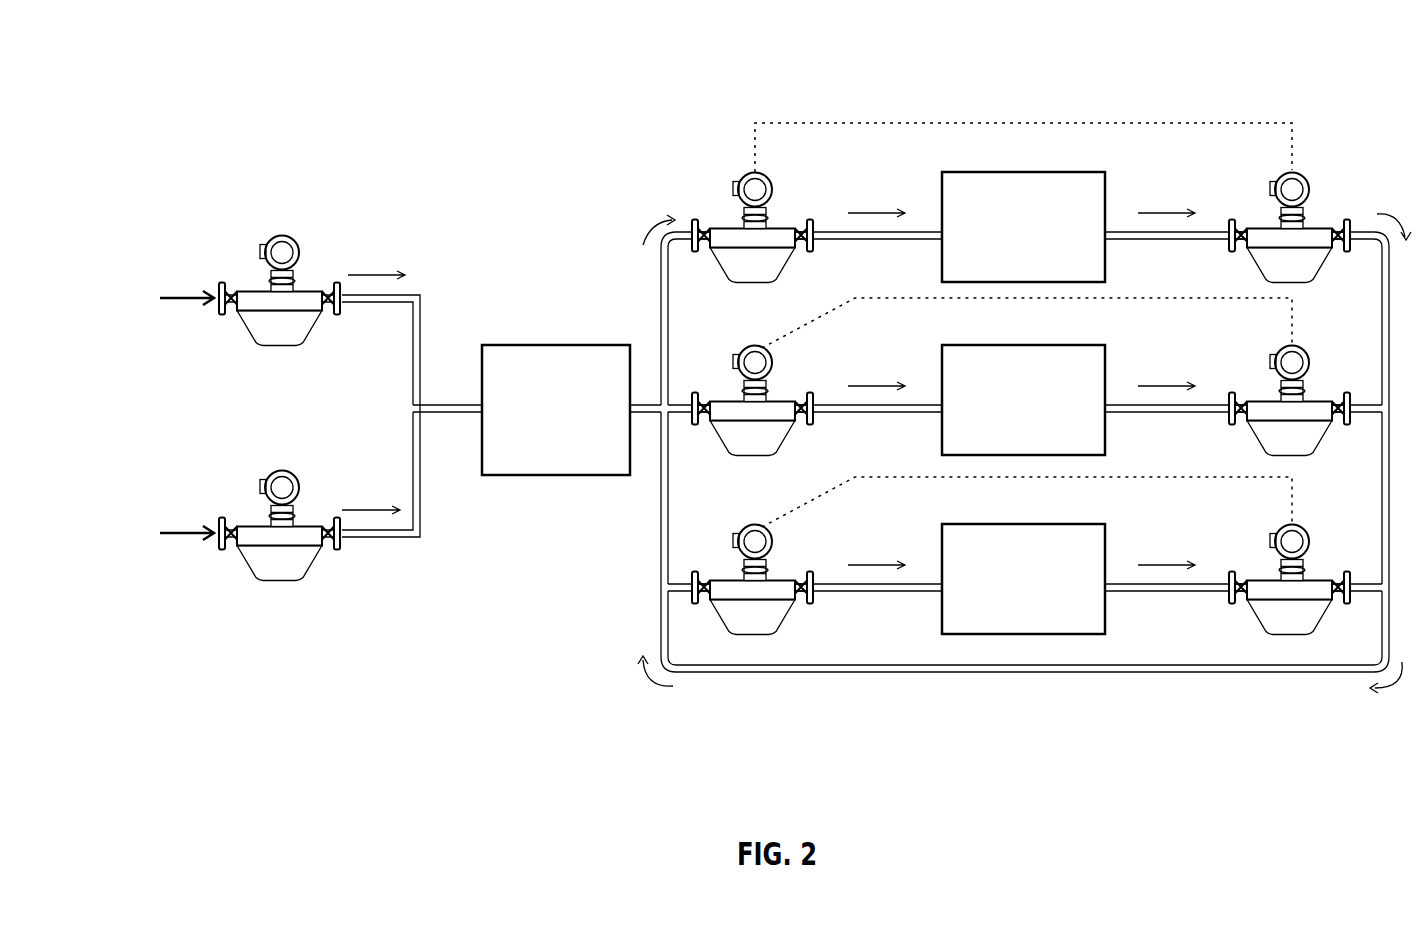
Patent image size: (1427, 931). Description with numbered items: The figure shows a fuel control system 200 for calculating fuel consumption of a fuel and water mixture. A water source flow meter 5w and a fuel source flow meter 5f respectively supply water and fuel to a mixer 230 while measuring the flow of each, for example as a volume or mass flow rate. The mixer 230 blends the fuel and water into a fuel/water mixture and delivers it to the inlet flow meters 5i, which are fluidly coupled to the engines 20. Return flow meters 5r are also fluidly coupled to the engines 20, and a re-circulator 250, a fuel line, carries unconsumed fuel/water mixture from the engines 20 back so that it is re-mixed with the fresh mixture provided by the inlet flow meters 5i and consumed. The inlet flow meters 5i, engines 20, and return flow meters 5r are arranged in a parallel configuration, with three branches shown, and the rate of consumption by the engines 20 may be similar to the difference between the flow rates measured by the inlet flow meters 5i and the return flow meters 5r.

The fuel control system 200 is at (598, 58).
The water source flow meter 5w is at (284, 218).
The fuel source flow meter 5f is at (287, 452).
The inlet flow meters 5i is at (700, 150).
The return flow meters 5r is at (1345, 140).
The mixer 230 is at (533, 449).
The engines 20 is at (1008, 259).
The re-circulator 250 is at (818, 712).